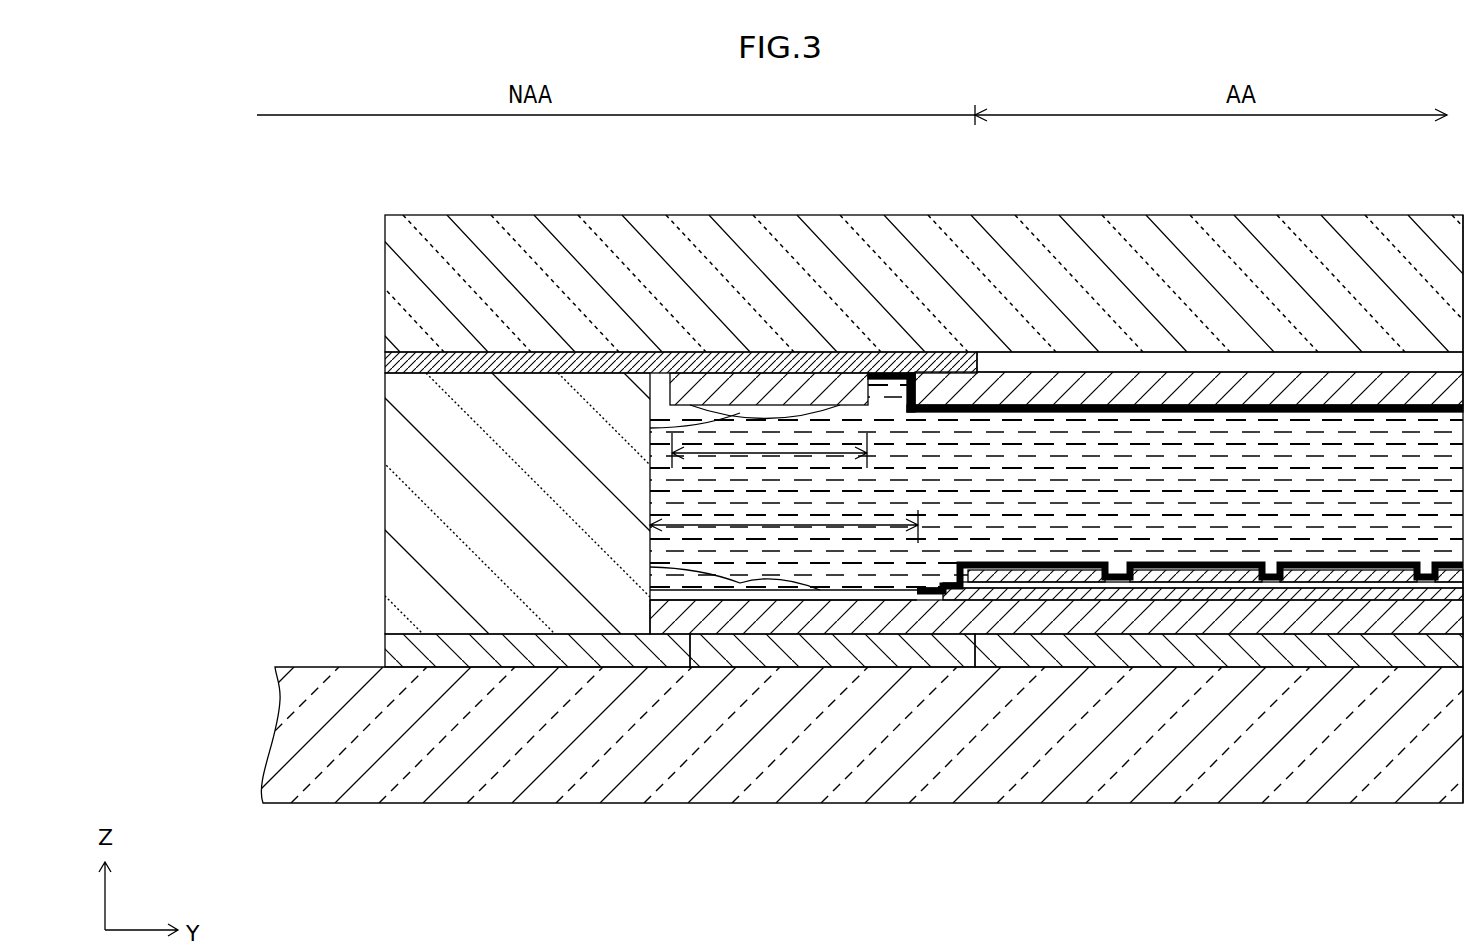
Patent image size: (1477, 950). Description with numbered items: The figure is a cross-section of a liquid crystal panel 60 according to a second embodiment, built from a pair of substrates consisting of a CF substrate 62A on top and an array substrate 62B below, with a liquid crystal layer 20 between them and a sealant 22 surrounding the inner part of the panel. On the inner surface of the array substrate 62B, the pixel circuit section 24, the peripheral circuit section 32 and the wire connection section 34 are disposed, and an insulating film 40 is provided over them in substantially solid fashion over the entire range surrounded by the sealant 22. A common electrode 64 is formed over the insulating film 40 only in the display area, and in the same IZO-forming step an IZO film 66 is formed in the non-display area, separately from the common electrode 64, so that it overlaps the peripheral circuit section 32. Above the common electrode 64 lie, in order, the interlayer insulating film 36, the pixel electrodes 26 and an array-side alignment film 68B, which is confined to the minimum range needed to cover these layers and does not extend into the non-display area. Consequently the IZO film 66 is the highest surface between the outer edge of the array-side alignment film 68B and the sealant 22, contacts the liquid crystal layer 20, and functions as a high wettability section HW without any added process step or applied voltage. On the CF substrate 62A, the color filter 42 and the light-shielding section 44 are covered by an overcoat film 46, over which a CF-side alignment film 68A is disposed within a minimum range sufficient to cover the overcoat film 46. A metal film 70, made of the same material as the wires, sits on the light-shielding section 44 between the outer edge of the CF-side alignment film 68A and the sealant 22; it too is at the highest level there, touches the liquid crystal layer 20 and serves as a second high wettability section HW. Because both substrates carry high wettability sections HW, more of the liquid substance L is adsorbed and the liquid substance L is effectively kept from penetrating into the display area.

The liquid crystal layer 20 is at (1382, 440).
The sealant 22 is at (408, 508).
The pixel circuit section 24 is at (1413, 657).
The pixel electrodes 26 is at (1055, 576).
The peripheral circuit section 32 is at (756, 650).
The wire connection section 34 is at (601, 655).
The interlayer insulating film 36 is at (986, 592).
The insulating film 40 is at (913, 600).
The color filter 42 is at (1030, 362).
The light-shielding section 44 is at (820, 360).
The overcoat film 46 is at (1098, 390).
The liquid crystal panel 60 is at (229, 235).
The CF substrate 62A is at (478, 248).
The array substrate 62B is at (300, 790).
The common electrode 64 is at (1133, 592).
The IZO film 66 is at (835, 593).
The CF-side alignment film 68A is at (1183, 412).
The array-side alignment film 68B is at (1215, 561).
The metal film 70 is at (712, 390).
The liquid substance L is at (650, 428).
The high wettability section HW is at (784, 488).